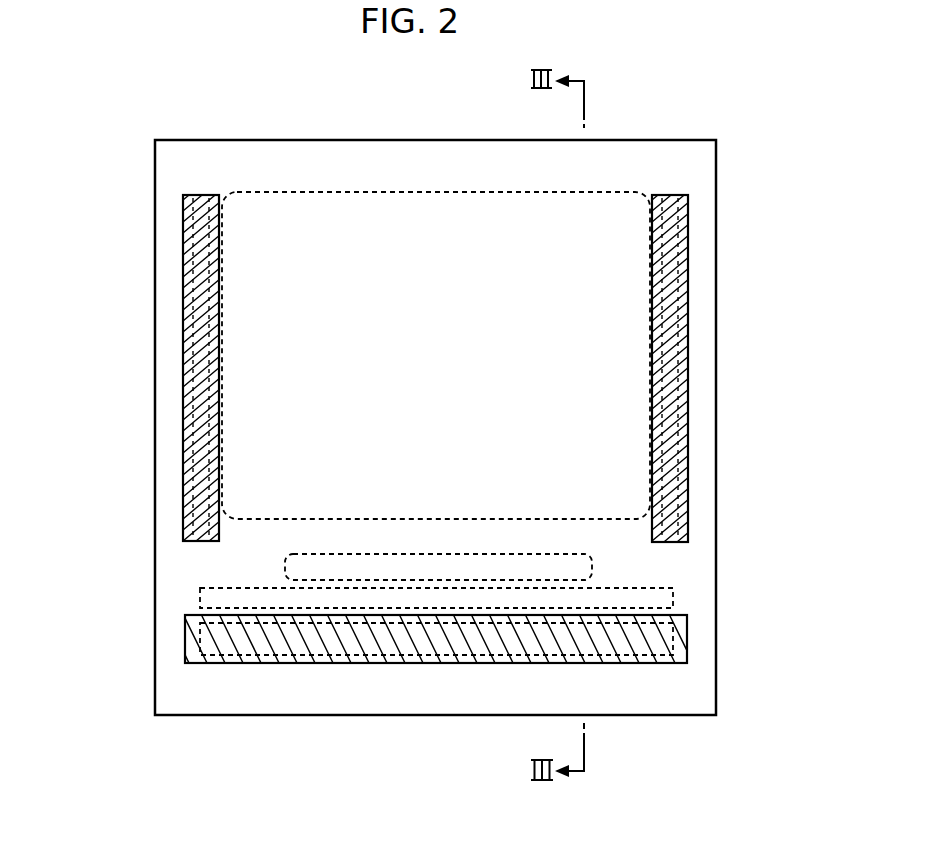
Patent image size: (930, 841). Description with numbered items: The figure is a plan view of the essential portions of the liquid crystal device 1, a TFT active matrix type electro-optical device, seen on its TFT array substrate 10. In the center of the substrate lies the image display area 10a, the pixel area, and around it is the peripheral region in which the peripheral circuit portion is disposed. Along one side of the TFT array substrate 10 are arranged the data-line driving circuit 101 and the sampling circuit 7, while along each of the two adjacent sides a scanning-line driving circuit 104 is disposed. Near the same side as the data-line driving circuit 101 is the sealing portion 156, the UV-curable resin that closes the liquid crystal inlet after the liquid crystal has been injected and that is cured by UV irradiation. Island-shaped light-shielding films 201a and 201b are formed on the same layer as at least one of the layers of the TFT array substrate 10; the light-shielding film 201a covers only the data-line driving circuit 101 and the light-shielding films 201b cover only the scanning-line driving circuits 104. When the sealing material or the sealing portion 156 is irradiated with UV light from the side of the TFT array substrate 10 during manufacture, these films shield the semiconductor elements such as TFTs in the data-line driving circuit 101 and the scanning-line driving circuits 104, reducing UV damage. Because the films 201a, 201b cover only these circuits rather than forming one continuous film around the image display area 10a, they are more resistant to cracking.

The liquid crystal device 1 is at (669, 87).
The TFT array substrate 10 is at (333, 148).
The image display area 10a is at (295, 192).
The light-shielding film 201b is at (185, 366).
The scanning-line driving circuit 104 is at (192, 425).
The sealing portion 156 is at (285, 566).
The sampling circuit 7 is at (673, 596).
The light-shielding film 201a is at (186, 646).
The data-line driving circuit 101 is at (228, 655).